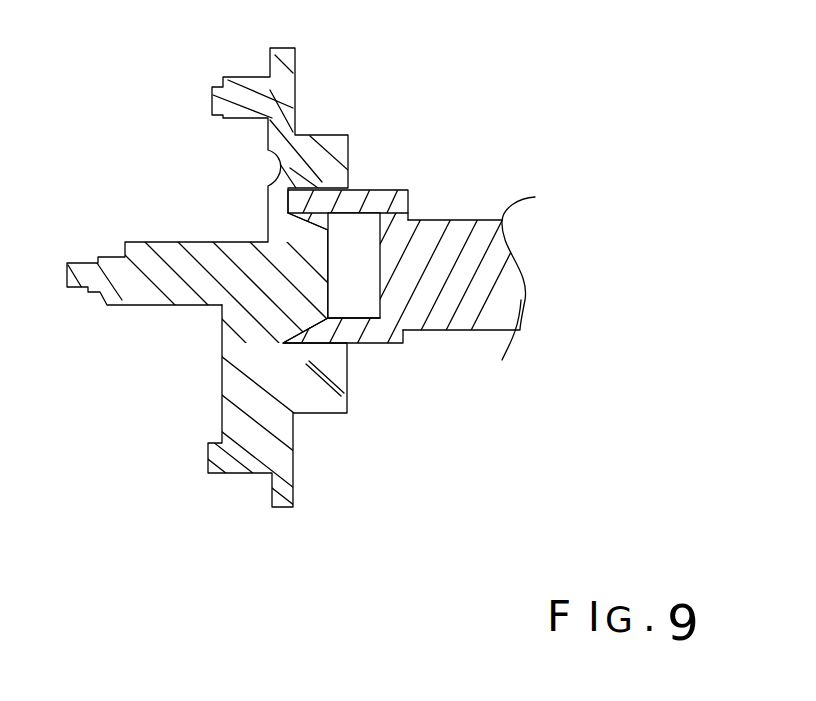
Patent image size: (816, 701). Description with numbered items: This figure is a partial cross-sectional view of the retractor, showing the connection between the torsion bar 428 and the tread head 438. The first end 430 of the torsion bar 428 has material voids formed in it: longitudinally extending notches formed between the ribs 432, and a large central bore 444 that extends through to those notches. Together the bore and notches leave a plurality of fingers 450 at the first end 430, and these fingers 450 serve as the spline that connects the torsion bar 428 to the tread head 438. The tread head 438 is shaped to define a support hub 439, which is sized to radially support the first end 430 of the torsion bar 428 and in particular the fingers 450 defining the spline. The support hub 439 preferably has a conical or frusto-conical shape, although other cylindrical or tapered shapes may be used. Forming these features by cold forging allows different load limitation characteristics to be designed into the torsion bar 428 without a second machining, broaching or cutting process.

The torsion bar 428 is at (468, 327).
The first end 430 is at (357, 342).
The ribs 432 is at (360, 342).
The tread head 438 is at (218, 268).
The support hub 439 is at (322, 262).
The central bore 444 is at (352, 262).
The fingers 450 is at (358, 190).